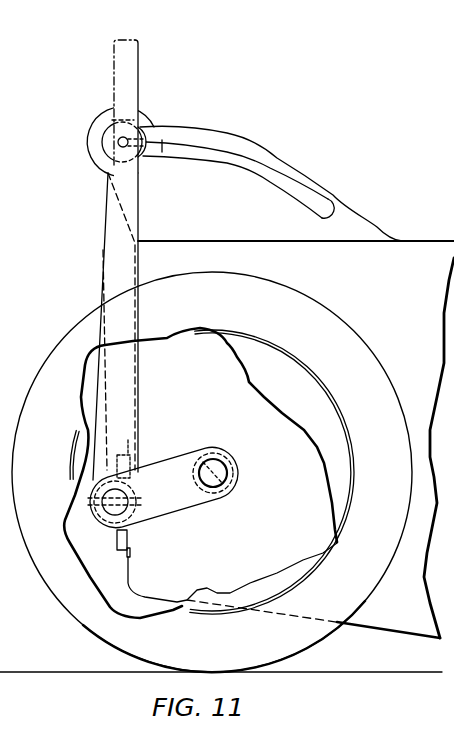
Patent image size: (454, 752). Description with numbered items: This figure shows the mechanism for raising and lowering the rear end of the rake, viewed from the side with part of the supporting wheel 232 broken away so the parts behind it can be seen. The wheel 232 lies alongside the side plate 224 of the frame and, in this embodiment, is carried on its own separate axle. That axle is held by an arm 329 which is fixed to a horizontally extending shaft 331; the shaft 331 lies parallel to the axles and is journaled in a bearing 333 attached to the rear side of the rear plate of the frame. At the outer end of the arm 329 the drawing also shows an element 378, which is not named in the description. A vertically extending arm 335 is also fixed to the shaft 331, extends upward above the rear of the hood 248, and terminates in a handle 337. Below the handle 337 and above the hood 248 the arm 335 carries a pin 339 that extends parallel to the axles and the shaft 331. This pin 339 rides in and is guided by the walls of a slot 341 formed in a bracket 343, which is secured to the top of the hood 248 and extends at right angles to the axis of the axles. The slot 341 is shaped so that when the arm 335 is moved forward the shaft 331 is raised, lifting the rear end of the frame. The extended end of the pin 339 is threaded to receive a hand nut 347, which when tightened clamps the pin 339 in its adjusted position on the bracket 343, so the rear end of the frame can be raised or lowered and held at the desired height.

The side plate 224 is at (400, 617).
The wheel 232 is at (72, 595).
The hood 248 is at (327, 243).
The arm 329 is at (202, 452).
The shaft 331 is at (112, 512).
The bearing 333 is at (123, 454).
The vertically extending arm 335 is at (113, 250).
The handle 337 is at (139, 53).
The pin 339 is at (128, 137).
The slot 341 is at (253, 165).
The bracket 343 is at (303, 207).
The hand nut 347 is at (87, 145).
The pin 378 is at (232, 465).